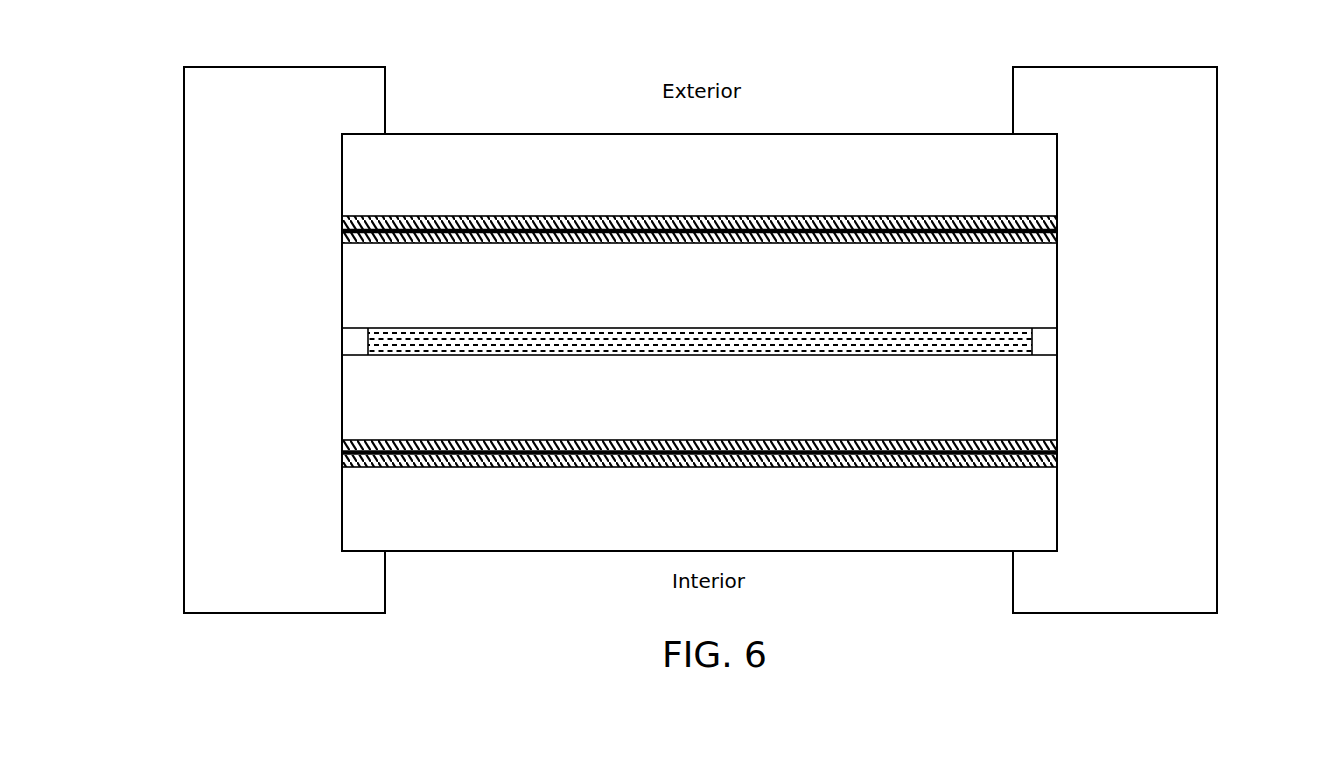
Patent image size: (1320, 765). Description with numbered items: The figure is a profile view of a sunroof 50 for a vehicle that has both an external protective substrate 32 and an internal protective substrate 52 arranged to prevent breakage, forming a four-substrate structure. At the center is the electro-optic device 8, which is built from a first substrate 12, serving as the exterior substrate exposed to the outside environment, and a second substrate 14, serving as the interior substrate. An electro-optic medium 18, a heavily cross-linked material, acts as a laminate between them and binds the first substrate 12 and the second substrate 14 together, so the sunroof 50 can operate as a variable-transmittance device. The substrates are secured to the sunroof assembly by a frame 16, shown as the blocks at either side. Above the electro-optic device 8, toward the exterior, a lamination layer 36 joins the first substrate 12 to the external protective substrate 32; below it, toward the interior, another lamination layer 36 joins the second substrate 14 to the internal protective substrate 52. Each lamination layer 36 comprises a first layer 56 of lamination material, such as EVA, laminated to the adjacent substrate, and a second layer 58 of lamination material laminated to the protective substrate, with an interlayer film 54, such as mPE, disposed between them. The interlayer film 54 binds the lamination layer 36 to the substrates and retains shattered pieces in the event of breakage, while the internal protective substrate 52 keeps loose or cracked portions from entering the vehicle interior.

The electro-optic device 8 is at (852, 263).
The first substrate 12 is at (482, 282).
The second substrate 14 is at (558, 423).
The frame 16 is at (200, 345).
The electro-optic medium 18 is at (750, 340).
The external protective substrate 32 is at (543, 175).
The lamination layer 36 is at (768, 220).
The sunroof 50 is at (888, 62).
The internal protective substrate 52 is at (896, 527).
The interlayer film 54 is at (610, 218).
The first layer 56 is at (1058, 243).
The second layer 58 is at (1058, 222).